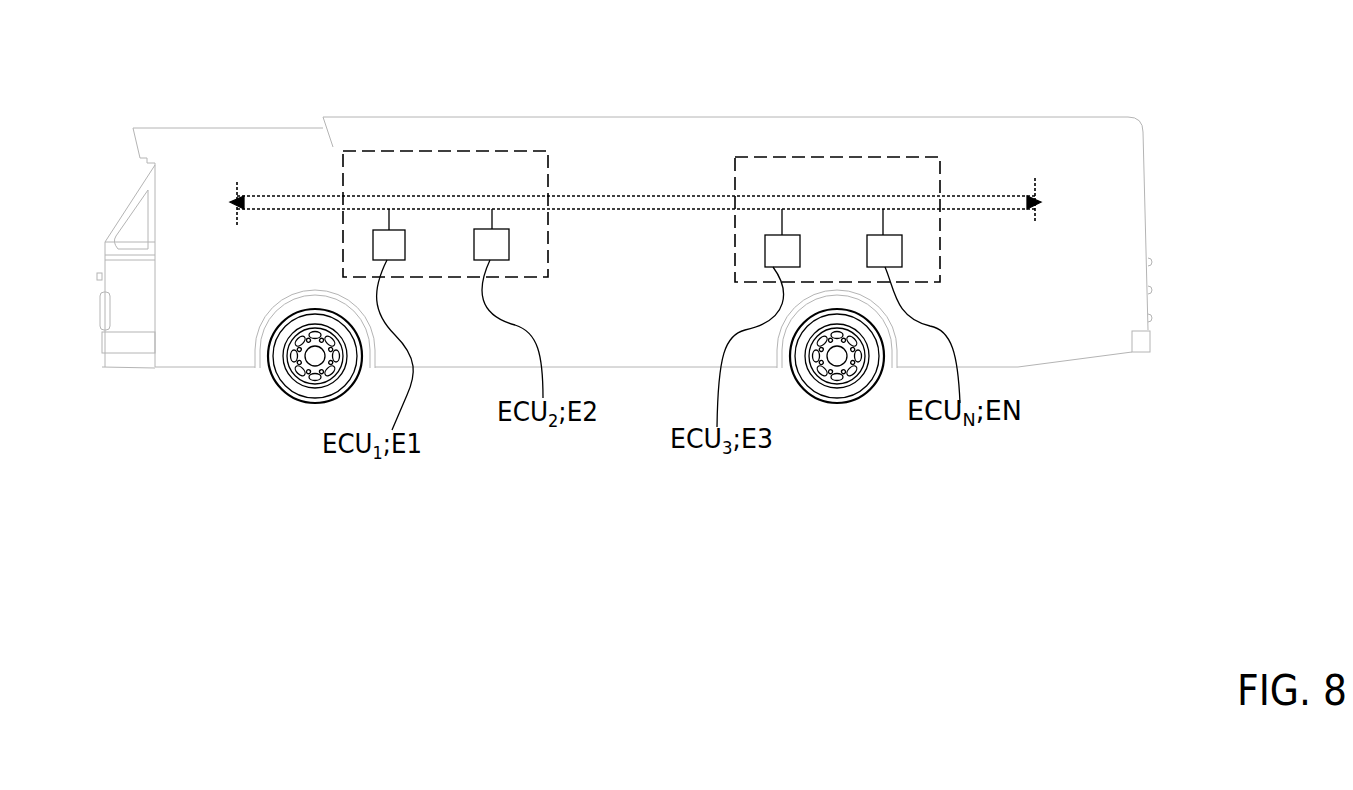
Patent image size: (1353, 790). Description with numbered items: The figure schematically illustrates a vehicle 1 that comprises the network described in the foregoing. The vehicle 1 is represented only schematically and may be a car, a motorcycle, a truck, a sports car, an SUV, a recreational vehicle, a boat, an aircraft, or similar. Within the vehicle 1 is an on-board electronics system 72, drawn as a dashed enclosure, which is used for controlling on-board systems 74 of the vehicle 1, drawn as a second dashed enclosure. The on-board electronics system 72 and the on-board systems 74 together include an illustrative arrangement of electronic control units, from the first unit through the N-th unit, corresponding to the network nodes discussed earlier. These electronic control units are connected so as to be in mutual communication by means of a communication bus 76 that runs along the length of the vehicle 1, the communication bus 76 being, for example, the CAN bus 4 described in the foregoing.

The vehicle 1 is at (108, 171).
The on-board electronics system 72 is at (480, 170).
The on-board systems 74 is at (872, 177).
The communication bus 76 is at (635, 143).
The CAN bus 4 is at (630, 196).